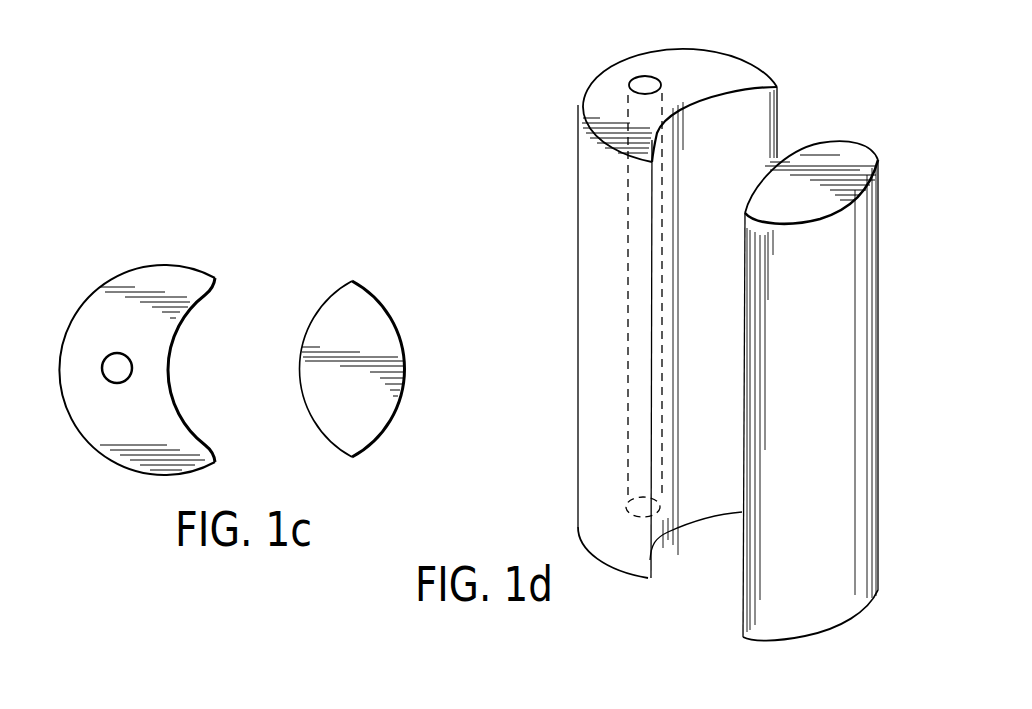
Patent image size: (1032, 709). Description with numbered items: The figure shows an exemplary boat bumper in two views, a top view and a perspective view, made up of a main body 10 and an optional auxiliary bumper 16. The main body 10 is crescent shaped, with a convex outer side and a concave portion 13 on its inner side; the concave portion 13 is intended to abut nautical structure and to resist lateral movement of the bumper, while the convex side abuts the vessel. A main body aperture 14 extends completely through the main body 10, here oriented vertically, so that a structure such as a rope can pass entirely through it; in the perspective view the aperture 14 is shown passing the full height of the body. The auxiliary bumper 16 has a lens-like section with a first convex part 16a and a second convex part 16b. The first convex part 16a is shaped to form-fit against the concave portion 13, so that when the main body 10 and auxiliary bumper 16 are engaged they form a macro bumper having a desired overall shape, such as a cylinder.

In FIG. 1c, the main body 10 is at (91, 277).
In FIG. 1d, the main body 10 is at (578, 84).
In FIG. 1c, the concave portion 13 is at (182, 326).
In FIG. 1d, the concave portion 13 is at (745, 121).
In FIG. 1c, the main body aperture 14 is at (121, 373).
In FIG. 1d, the main body aperture 14 is at (645, 80).
In FIG. 1c, the auxiliary bumper 16 is at (358, 367).
In FIG. 1d, the auxiliary bumper 16 is at (789, 372).
In FIG. 1c, the first convex part 16a is at (306, 410).
In FIG. 1d, the first convex part 16a is at (752, 182).
In FIG. 1c, the second convex part 16b is at (406, 365).
In FIG. 1d, the second convex part 16b is at (819, 556).